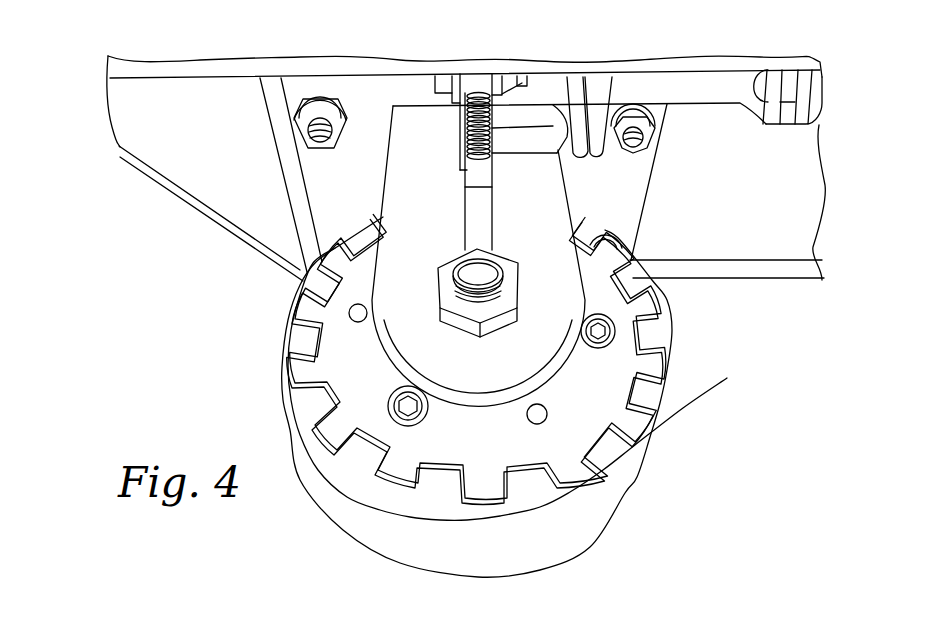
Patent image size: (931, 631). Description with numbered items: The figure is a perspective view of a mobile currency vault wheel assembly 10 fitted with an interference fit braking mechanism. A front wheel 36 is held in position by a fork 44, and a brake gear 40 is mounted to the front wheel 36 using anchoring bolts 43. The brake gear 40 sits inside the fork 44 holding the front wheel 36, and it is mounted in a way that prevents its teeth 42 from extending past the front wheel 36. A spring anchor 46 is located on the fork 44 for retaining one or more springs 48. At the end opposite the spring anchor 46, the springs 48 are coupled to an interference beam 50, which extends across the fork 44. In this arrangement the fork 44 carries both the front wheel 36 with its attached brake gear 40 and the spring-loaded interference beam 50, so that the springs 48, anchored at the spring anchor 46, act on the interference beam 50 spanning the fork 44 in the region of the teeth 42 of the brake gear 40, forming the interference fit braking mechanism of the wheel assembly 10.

The caster assembly 10 is at (123, 172).
The front wheel 36 is at (625, 490).
The brake gear 40 is at (298, 366).
The teeth 42 is at (653, 361).
The anchoring bolts 43 is at (300, 412).
The fork 44 is at (557, 297).
The spring anchor 46 is at (477, 213).
The springs 48 is at (484, 74).
The interference beam 50 is at (460, 133).